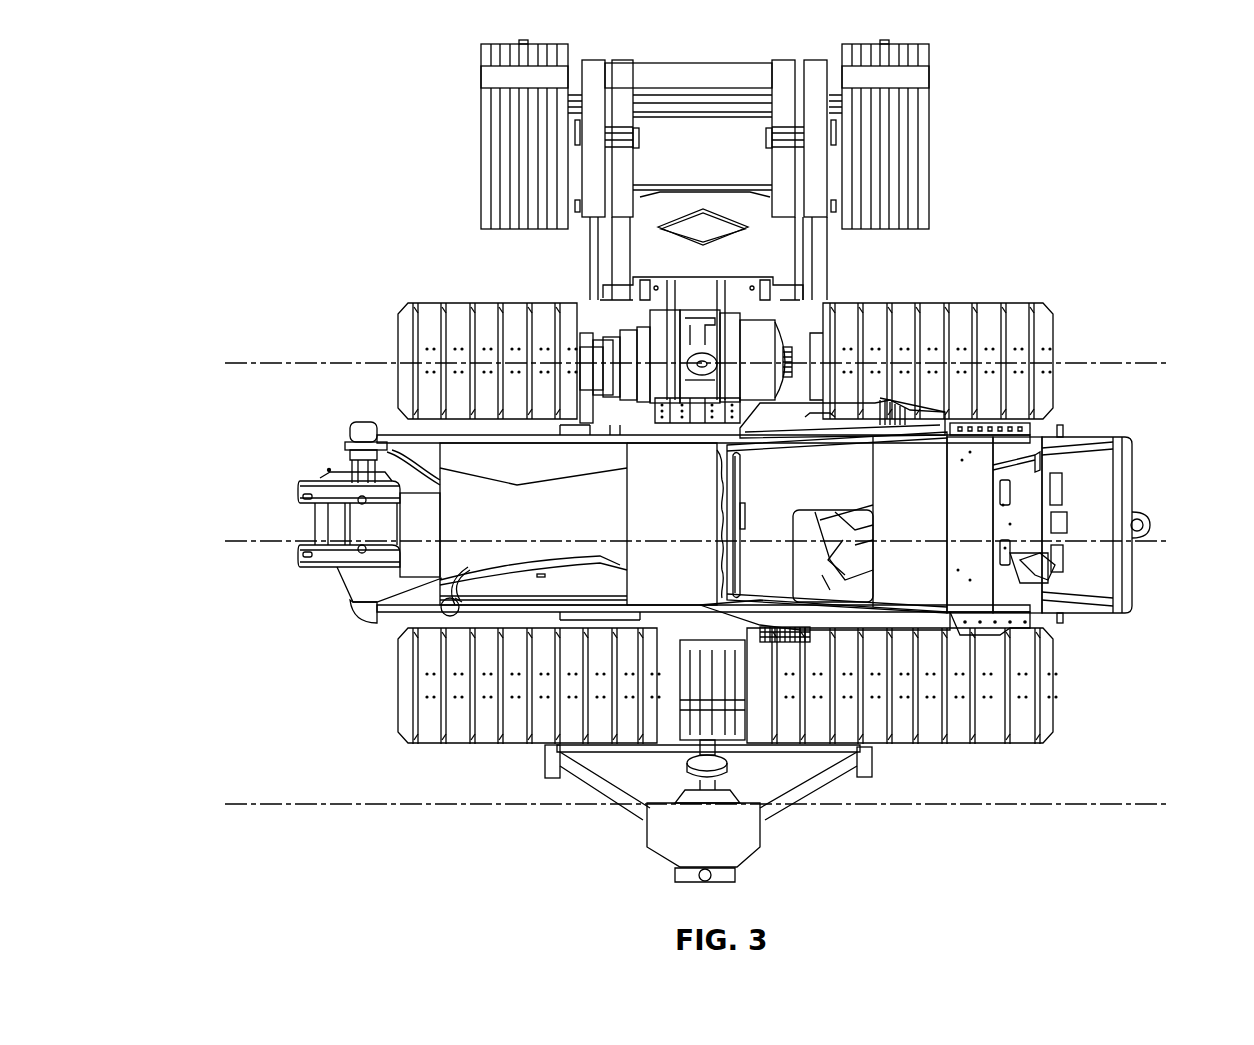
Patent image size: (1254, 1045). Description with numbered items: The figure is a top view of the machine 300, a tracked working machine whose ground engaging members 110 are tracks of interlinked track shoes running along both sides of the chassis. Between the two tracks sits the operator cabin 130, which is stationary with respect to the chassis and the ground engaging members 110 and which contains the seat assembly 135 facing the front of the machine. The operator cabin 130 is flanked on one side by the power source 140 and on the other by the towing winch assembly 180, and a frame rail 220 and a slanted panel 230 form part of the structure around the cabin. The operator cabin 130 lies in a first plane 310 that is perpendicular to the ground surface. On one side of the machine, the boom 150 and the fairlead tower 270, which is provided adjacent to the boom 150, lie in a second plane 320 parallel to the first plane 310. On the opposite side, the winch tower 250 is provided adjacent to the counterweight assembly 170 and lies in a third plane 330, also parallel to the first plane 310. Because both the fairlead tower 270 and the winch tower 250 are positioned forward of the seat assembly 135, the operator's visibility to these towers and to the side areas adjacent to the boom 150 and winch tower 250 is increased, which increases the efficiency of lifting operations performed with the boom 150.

The vehicle 300 is at (236, 54).
The counterweight assembly 170 is at (478, 103).
The ground engaging members 110 is at (400, 312).
The winch tower 250 is at (713, 383).
The slanted panel 230 is at (927, 423).
The operator cabin 130 is at (1035, 470).
The power source 140 is at (1107, 470).
The seat assembly 135 is at (875, 527).
The cab frame rail 220 is at (823, 622).
The fairlead tower 270 is at (723, 763).
The boom 150 is at (677, 855).
The towing winch assembly 180 is at (300, 490).
The third plane 330 is at (240, 362).
The first plane 310 is at (240, 540).
The second plane 320 is at (240, 803).